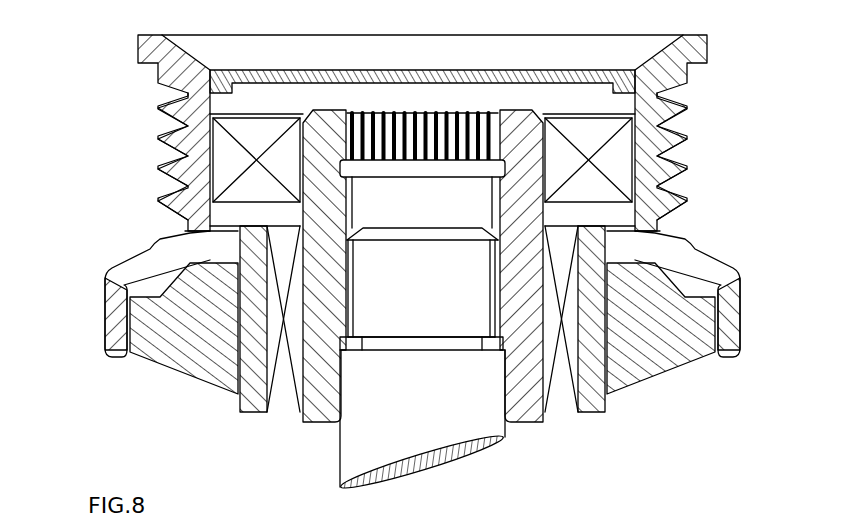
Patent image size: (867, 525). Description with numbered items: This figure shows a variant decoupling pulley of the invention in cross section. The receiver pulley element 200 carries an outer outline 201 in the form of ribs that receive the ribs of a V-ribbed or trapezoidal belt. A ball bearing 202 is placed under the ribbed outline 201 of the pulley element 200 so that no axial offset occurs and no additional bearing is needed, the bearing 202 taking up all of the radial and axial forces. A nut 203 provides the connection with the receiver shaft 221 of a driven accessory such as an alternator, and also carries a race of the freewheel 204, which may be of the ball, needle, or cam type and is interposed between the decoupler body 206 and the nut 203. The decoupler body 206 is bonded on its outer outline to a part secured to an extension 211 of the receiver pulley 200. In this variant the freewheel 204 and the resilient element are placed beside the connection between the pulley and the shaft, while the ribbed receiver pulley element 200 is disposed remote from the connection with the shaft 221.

The receiver pulley element 200 is at (188, 95).
The outer outline 201 is at (163, 110).
The ball bearing 202 is at (163, 182).
The nut 203 is at (510, 268).
The freewheel 204 is at (282, 400).
The decoupler body 206 is at (197, 365).
The extension 211 is at (110, 318).
The receiver shaft 221 is at (357, 443).